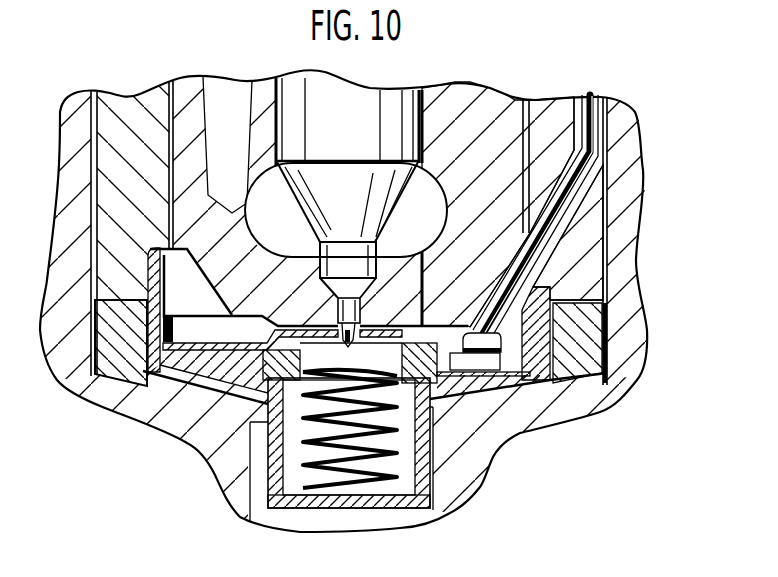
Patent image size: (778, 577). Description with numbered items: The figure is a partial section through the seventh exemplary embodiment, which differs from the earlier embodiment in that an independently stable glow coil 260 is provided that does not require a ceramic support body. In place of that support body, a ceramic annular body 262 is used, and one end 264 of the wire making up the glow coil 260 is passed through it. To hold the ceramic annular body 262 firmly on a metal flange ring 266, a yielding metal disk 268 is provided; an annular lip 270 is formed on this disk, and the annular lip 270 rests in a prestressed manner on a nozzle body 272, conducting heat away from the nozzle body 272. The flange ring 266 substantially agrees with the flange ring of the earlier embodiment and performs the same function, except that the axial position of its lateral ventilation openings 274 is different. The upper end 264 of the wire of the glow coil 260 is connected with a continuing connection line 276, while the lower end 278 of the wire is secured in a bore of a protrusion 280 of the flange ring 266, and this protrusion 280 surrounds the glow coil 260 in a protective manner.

The glow coil 260 is at (363, 490).
The ceramic annular body 262 is at (200, 453).
The end of the wire 264 is at (389, 373).
The metal flange ring 266 is at (158, 438).
The yielding metal disk 268 is at (125, 422).
The annular lip 270 is at (283, 350).
The nozzle body 272 is at (473, 127).
The lateral ventilation openings 274 is at (220, 475).
The connection line 276 is at (592, 132).
The lower end of the wire 278 is at (313, 490).
The protrusion 280 is at (250, 503).